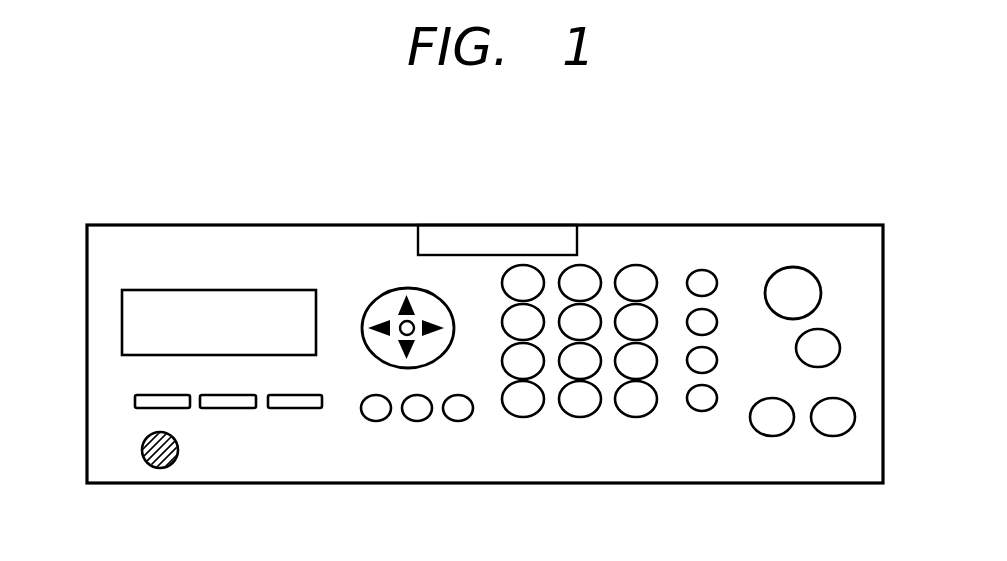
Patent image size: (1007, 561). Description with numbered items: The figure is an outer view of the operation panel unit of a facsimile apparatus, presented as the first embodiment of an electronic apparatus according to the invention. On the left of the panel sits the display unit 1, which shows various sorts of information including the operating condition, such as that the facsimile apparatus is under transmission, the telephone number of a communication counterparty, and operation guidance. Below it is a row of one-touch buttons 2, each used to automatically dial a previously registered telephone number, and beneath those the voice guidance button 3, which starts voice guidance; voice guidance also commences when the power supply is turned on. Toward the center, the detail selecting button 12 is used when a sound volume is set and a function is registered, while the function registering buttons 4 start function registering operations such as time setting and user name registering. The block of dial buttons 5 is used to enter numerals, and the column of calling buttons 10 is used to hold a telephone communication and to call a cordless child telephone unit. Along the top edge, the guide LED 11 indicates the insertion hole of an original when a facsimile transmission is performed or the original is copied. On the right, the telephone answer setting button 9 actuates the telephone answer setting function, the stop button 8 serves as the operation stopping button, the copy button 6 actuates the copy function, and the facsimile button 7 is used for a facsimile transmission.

The display unit 1 is at (121, 316).
The one-touch button 2 is at (135, 401).
The voice guidance button 3 is at (143, 445).
The function registering button 4 is at (420, 420).
The dial button 5 is at (580, 418).
The copy button 6 is at (773, 436).
The facsimile button 7 is at (838, 436).
The stop button 8 is at (840, 344).
The telephone answer setting button 9 is at (807, 268).
The calling button 10 is at (707, 271).
The guide LED 11 is at (514, 224).
The detail selecting button 12 is at (389, 290).